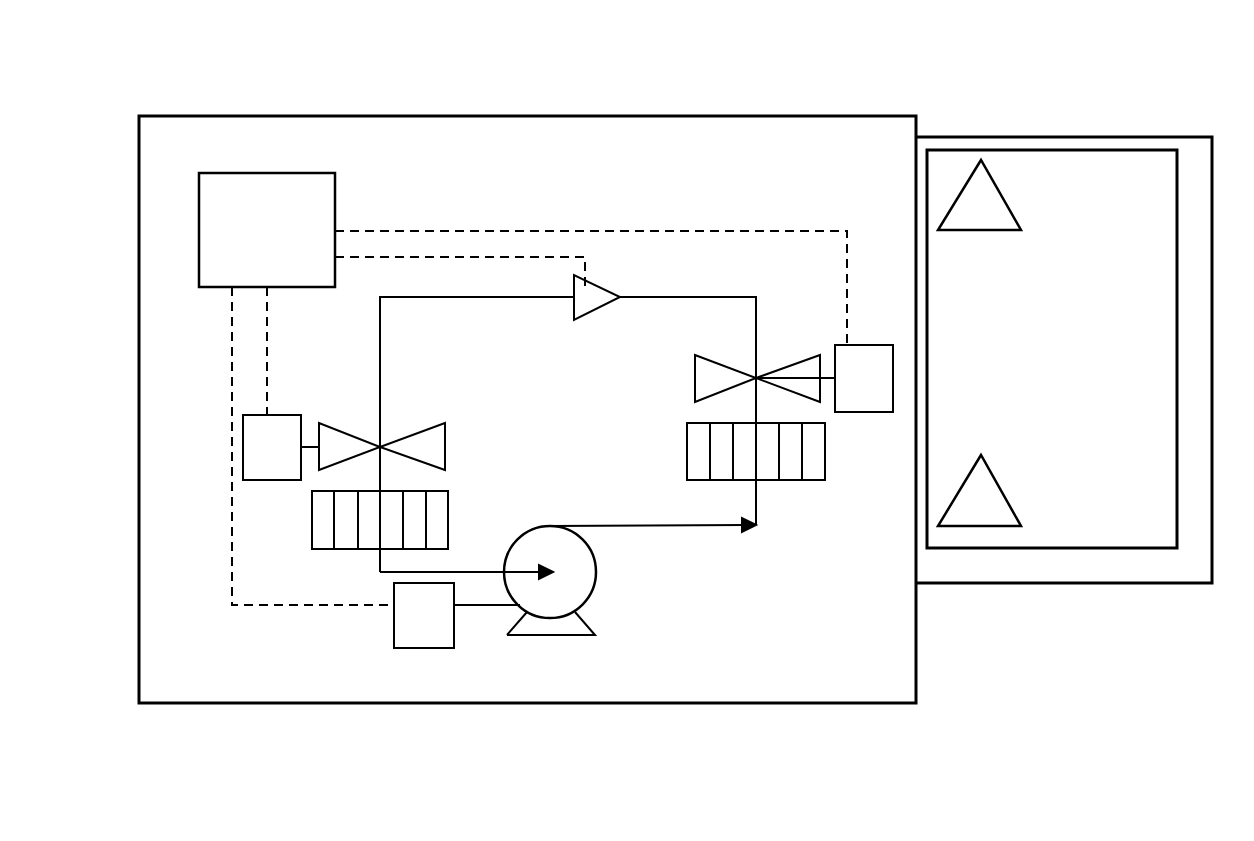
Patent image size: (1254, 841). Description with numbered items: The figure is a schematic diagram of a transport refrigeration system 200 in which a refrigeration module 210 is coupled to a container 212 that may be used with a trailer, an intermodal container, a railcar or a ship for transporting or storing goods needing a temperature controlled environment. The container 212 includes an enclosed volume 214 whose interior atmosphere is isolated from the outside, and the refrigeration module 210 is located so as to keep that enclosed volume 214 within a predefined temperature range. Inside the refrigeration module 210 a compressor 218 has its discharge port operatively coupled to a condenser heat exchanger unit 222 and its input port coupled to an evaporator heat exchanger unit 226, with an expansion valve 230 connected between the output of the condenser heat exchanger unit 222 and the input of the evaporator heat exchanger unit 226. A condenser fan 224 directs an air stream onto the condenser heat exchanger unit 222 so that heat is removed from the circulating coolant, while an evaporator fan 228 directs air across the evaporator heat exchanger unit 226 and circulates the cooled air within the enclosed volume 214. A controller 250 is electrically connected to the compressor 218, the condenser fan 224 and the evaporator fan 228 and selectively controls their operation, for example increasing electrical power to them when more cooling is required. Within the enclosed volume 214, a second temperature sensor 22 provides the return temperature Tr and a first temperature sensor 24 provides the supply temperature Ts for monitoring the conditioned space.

The transport refrigeration system 200 is at (662, 75).
The refrigeration module 210 is at (527, 409).
The controller 250 is at (523, 389).
The expansion valve 230 is at (597, 315).
The condenser fan 224 is at (695, 370).
The condenser heat exchanger unit 222 is at (687, 447).
The evaporator fan 228 is at (448, 433).
The evaporator heat exchanger unit 226 is at (448, 491).
The compressor 218 is at (597, 572).
The container 212 is at (983, 583).
The enclosed volume 214 is at (1052, 349).
The second temperature sensor 22 is at (967, 230).
The first temperature sensor 24 is at (997, 480).